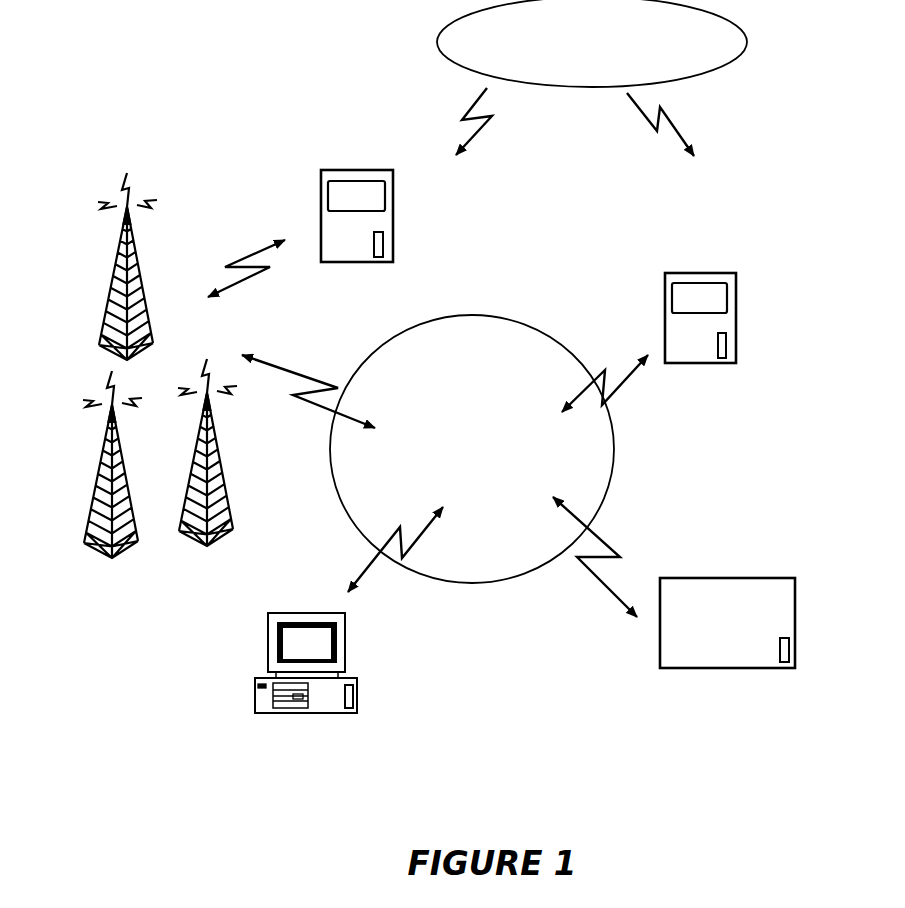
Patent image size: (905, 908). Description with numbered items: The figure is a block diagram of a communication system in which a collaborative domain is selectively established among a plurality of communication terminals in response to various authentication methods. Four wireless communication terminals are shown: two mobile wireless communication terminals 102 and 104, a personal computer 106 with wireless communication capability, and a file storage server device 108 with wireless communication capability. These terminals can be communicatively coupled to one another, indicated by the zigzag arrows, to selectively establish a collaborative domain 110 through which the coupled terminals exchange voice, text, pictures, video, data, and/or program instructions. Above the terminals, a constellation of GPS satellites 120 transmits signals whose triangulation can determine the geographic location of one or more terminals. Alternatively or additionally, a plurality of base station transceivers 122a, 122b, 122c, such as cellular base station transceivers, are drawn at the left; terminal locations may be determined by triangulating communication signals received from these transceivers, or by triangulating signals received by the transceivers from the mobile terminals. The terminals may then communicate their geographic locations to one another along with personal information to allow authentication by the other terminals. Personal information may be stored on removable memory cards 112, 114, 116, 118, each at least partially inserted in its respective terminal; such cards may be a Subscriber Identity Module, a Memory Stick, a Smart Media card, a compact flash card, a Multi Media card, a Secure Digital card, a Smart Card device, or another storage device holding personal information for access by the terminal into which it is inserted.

The mobile wireless communication terminal 102 is at (321, 217).
The mobile wireless communication terminal 104 is at (666, 317).
The personal computer 106 is at (270, 628).
The file storage server device 108 is at (745, 644).
The collaborative domain 110 is at (491, 504).
The removable memory card 112 is at (380, 242).
The removable memory card 114 is at (722, 342).
The removable memory card 116 is at (349, 693).
The removable memory card 118 is at (785, 648).
The GPS satellites 120 is at (573, 66).
The base station transceiver 122a is at (133, 248).
The base station transceiver 122b is at (107, 455).
The base station transceiver 122c is at (232, 518).